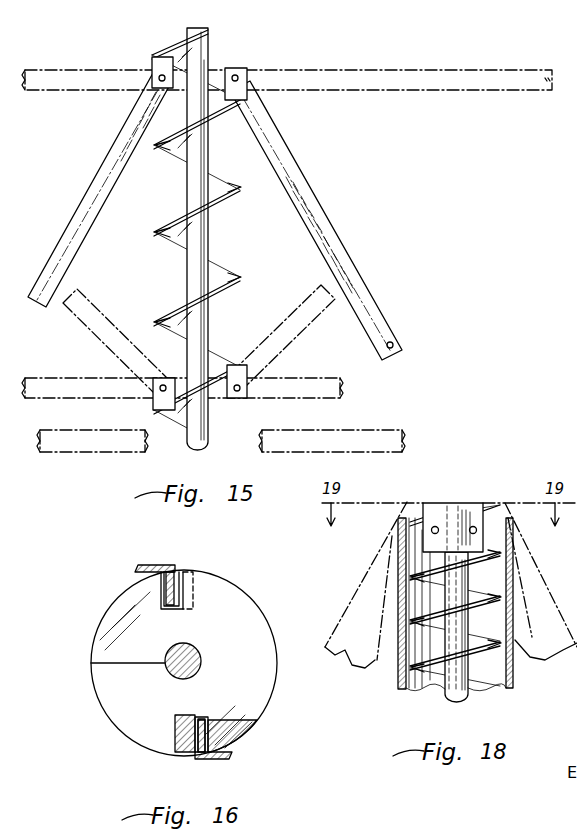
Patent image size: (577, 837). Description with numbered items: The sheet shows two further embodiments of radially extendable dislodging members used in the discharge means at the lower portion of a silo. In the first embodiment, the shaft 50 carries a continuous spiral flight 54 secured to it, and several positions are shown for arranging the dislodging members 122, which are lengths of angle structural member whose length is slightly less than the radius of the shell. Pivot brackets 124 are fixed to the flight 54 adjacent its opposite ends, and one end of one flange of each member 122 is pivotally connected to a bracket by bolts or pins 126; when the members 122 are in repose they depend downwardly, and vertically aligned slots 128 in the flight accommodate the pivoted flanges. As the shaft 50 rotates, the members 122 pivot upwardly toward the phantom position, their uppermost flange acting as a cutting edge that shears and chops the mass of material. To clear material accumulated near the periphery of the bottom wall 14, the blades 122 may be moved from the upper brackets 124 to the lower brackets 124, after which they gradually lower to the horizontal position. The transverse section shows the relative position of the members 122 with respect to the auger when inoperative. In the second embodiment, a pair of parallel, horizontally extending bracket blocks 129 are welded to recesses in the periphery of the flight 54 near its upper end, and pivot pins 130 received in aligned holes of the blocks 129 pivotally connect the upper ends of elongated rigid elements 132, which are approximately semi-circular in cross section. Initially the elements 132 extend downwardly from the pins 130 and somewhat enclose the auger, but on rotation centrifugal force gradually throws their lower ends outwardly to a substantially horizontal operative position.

In FIG. 15, the bottom wall 14 is at (352, 434).
In FIG. 15, the shaft 50 is at (209, 243).
In FIG. 16, the shaft 50 is at (166, 678).
In FIG. 18, the shaft 50 is at (470, 689).
In FIG. 15, the spiral flight 54 is at (198, 239).
In FIG. 16, the spiral flight 54 is at (258, 637).
In FIG. 18, the spiral flight 54 is at (450, 611).
In FIG. 15, the radially extendable dislodging members 122 is at (92, 72).
In FIG. 16, the radially extendable dislodging members 122 is at (150, 565).
In FIG. 15, the pivot brackets 124 is at (153, 56).
In FIG. 16, the pivot brackets 124 is at (196, 580).
In FIG. 15, the bolts or pins 126 is at (244, 70).
In FIG. 15, the slots 128 is at (158, 236).
In FIG. 16, the slots 128 is at (181, 572).
In FIG. 18, the bracket blocks 129 is at (440, 503).
In FIG. 18, the pivot pins 130 is at (474, 526).
In FIG. 18, the elongated rigid elements 132 is at (375, 563).